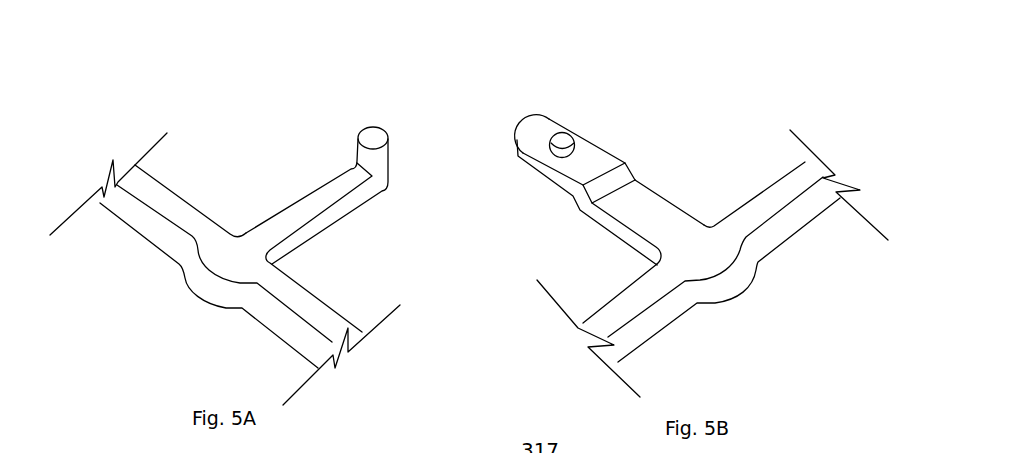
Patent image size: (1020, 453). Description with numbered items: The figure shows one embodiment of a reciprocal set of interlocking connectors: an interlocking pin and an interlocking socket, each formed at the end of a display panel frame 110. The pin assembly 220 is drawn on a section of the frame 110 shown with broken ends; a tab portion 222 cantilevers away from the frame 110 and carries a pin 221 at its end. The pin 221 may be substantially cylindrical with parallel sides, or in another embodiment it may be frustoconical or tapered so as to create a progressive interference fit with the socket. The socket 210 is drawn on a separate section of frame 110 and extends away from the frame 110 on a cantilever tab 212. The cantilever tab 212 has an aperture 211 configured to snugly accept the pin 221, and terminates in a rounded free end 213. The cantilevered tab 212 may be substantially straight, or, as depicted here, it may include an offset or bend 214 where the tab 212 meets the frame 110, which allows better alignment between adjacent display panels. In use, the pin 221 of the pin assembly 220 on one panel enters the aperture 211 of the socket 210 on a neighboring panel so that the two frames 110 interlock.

In FIG. 5A, the display panel frame 110 is at (178, 291).
In FIG. 5B, the display panel frame 110 is at (760, 294).
In FIG. 5B, the socket 210 is at (618, 138).
In FIG. 5B, the aperture 211 is at (563, 119).
In FIG. 5B, the cantilever tab 212 is at (673, 188).
In FIG. 5B, the rounded free end 213 is at (511, 110).
In FIG. 5B, the offset or bend 214 is at (561, 209).
In FIG. 5A, the pin assembly 220 is at (288, 177).
In FIG. 5A, the pin 221 is at (356, 116).
In FIG. 5A, the tab portion 222 is at (356, 221).